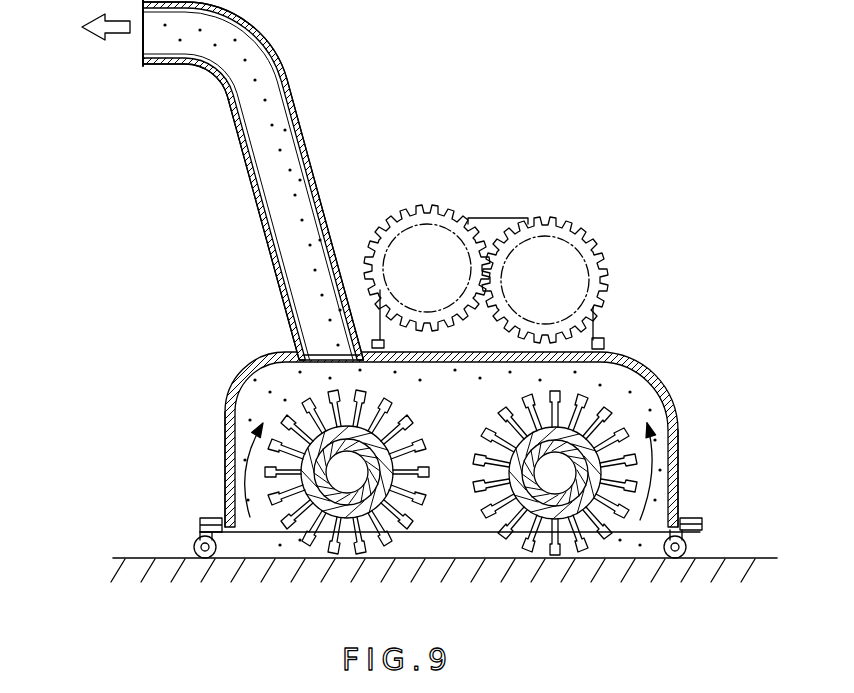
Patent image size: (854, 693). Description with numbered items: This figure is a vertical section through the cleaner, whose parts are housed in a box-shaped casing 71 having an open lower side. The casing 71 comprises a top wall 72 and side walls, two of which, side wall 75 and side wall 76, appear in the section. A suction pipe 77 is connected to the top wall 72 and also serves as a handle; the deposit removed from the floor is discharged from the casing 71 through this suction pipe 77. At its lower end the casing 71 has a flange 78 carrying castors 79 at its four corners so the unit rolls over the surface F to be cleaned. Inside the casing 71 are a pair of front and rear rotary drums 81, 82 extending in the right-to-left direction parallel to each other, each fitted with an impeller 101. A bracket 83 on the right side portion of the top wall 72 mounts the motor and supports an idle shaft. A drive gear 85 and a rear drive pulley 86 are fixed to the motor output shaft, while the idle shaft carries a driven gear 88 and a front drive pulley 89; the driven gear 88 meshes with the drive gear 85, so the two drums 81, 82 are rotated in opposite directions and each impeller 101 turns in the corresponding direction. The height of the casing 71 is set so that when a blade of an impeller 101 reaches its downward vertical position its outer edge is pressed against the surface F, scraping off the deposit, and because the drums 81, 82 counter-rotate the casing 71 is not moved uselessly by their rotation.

The casing 71 is at (683, 457).
The top wall 72 is at (598, 340).
The side wall 75 is at (680, 425).
The side wall 76 is at (223, 423).
The suction pipe 77 is at (243, 146).
The flange 78 is at (205, 518).
The castor 79 is at (195, 543).
The front rotary drum 81 is at (515, 476).
The rear rotary drum 82 is at (388, 450).
The bracket 83 is at (505, 216).
The drive gear 85 is at (430, 202).
The rear drive pulley 86 is at (412, 228).
The driven gear 88 is at (557, 222).
The front drive pulley 89 is at (583, 240).
The impeller 101 is at (402, 547).
The surface to be cleaned F is at (140, 558).